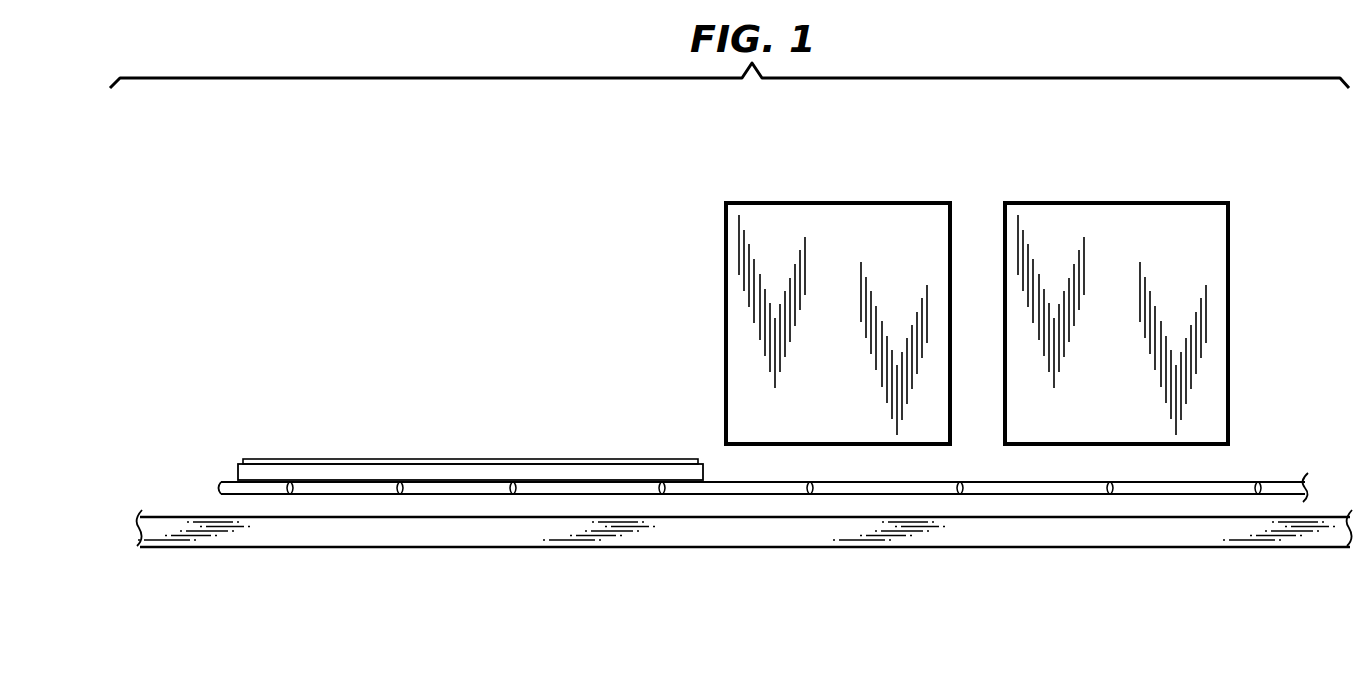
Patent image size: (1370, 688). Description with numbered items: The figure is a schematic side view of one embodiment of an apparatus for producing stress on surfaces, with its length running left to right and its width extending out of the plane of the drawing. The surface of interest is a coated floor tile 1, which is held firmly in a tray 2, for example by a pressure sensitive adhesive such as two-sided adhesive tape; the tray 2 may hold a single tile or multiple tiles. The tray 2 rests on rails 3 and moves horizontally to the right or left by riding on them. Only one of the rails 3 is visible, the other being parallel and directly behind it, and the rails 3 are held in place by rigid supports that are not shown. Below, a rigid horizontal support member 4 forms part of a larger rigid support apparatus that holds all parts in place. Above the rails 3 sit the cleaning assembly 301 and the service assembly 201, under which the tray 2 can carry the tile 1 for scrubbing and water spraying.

The coated floor tile 1 is at (388, 459).
The tray 2 is at (238, 469).
The rails 3 is at (217, 489).
The rigid horizontal support member 4 is at (290, 548).
The service assembly 201 is at (1107, 203).
The cleaning assembly 301 is at (830, 203).